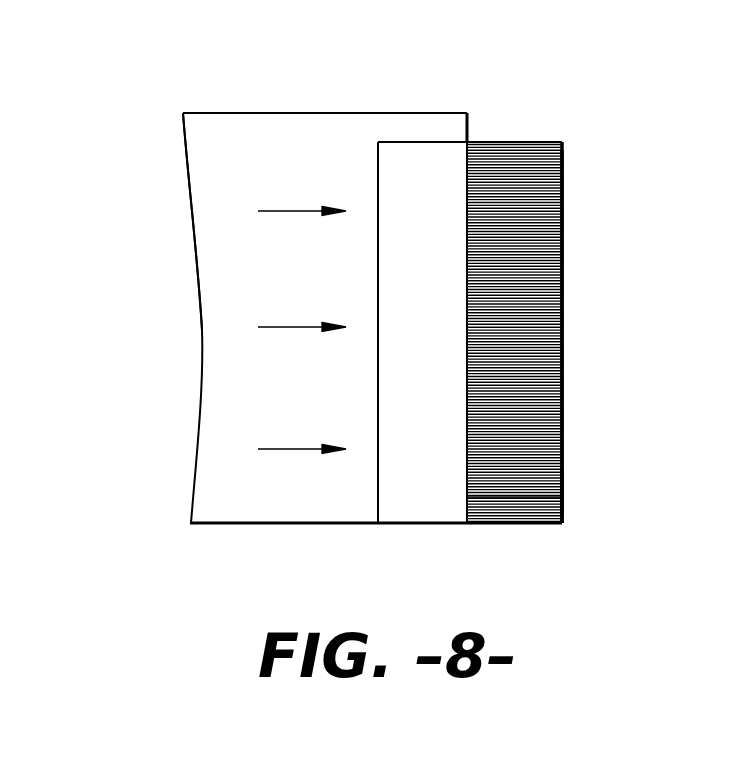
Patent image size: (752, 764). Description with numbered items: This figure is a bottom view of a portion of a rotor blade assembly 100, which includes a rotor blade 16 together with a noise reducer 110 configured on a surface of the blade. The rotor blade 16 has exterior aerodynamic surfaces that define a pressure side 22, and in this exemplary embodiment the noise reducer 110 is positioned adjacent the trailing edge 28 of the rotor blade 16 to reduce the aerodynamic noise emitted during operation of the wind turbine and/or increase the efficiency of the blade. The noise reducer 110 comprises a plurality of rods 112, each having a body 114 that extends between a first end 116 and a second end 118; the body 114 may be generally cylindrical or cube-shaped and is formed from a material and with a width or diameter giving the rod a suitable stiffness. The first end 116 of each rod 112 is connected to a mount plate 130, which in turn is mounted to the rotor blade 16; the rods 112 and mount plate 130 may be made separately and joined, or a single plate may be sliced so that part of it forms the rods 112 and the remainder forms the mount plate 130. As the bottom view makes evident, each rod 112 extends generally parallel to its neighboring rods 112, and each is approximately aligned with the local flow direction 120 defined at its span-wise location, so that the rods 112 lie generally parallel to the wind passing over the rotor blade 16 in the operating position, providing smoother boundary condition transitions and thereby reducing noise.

The rotor blade assembly 100 is at (153, 81).
The rotor blade 16 is at (145, 245).
The pressure side 22 is at (333, 135).
The trailing edge 28 is at (468, 120).
The mount plate 130 is at (424, 160).
The noise reducer 110 is at (559, 116).
The rods 112 is at (567, 258).
The second end 118 is at (562, 500).
The first end 116 is at (467, 500).
The body 114 is at (501, 498).
The local flow directions 120 is at (294, 210).